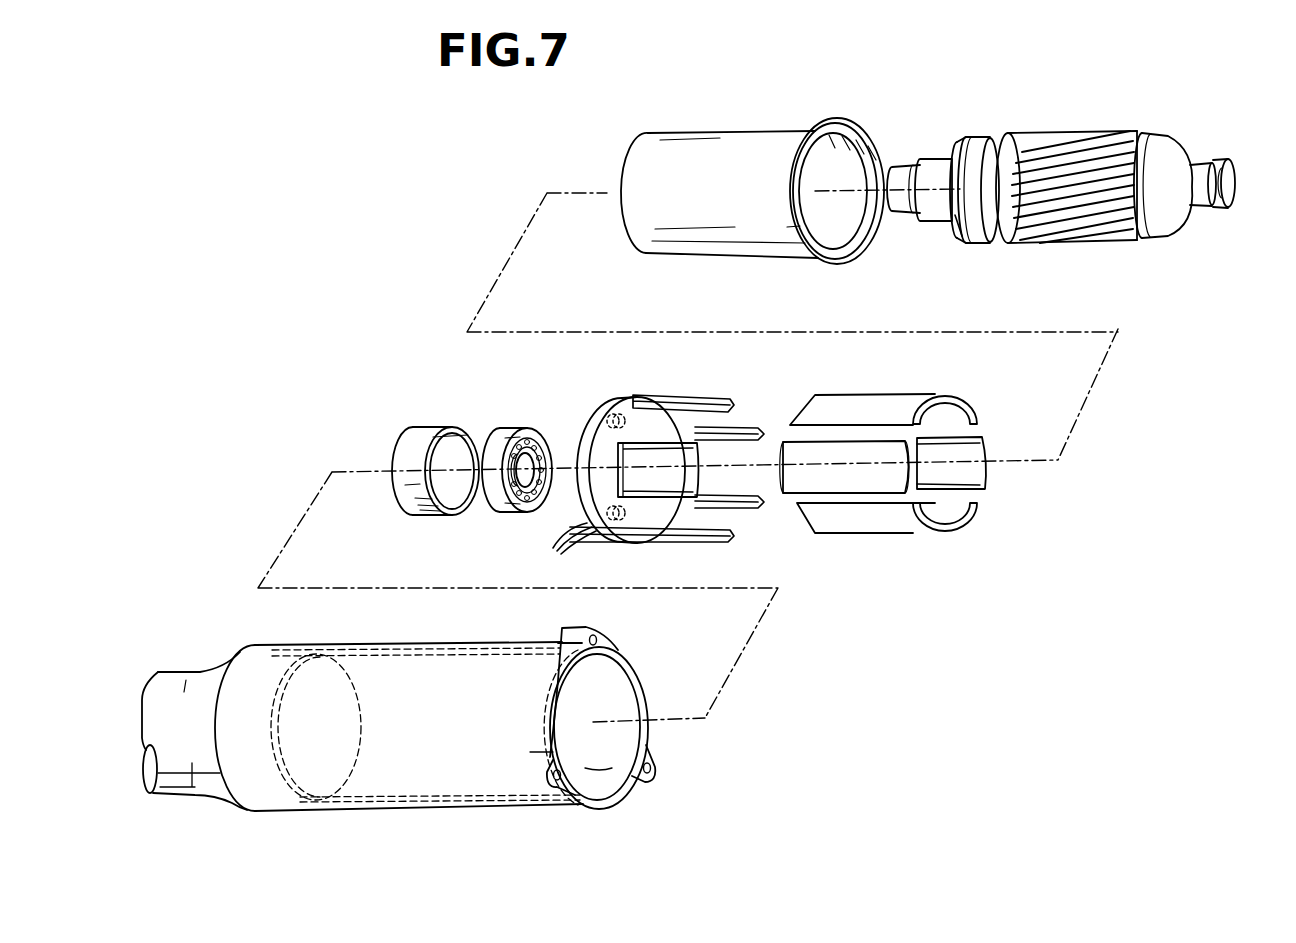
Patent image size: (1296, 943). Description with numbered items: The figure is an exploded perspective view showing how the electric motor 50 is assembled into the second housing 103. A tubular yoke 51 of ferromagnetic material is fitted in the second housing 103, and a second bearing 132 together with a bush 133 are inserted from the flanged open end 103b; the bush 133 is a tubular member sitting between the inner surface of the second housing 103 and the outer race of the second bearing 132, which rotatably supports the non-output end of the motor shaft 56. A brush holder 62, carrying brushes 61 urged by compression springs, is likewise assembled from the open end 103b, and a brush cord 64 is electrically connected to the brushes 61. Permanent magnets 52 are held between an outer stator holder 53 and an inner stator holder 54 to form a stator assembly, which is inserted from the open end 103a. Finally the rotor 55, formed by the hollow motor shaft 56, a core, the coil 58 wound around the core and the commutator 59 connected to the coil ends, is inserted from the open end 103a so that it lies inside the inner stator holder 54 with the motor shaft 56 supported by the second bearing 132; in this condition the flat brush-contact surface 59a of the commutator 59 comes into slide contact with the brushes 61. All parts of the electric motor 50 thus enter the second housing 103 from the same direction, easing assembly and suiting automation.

The electric motor 50 is at (315, 193).
The tubular yoke 51 is at (458, 642).
The permanent magnets 52 is at (930, 388).
The outer stator holder 53 is at (690, 400).
The inner stator holder 54 is at (742, 150).
The rotor 55 is at (1225, 140).
The motor shaft 56 is at (1180, 140).
The coil 58 is at (1065, 150).
The commutator 59 is at (970, 140).
The brush-contact surface 59a is at (962, 226).
The brushes 61 is at (620, 420).
The brush holder 62 is at (587, 417).
The brush cord 64 is at (550, 522).
The second housing 103 is at (276, 662).
The open end 103a is at (657, 763).
The flanged open end 103b is at (600, 770).
The second bearing 132 is at (504, 437).
The bush 133 is at (422, 432).